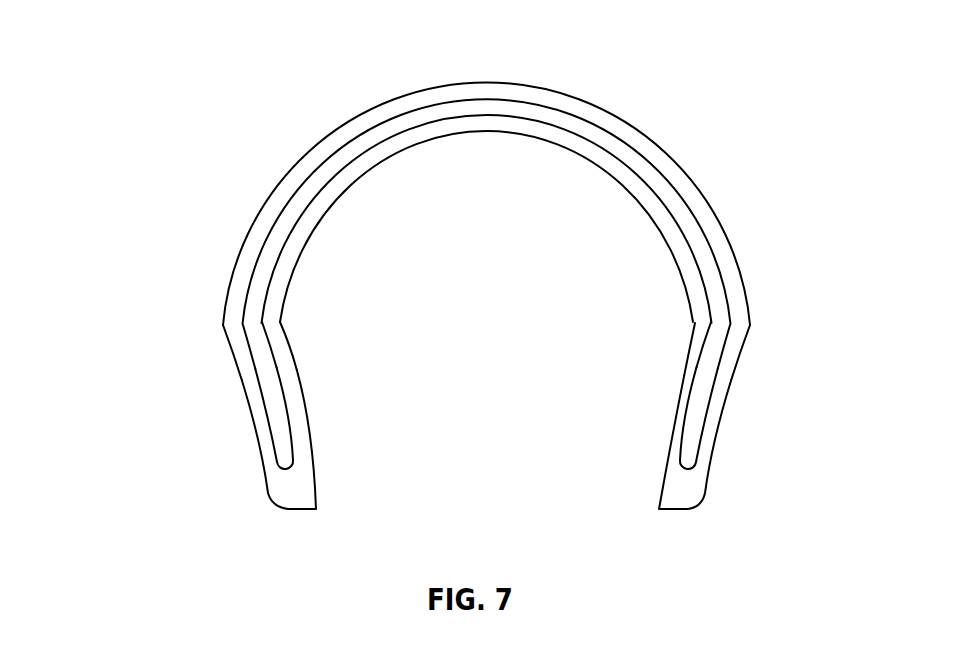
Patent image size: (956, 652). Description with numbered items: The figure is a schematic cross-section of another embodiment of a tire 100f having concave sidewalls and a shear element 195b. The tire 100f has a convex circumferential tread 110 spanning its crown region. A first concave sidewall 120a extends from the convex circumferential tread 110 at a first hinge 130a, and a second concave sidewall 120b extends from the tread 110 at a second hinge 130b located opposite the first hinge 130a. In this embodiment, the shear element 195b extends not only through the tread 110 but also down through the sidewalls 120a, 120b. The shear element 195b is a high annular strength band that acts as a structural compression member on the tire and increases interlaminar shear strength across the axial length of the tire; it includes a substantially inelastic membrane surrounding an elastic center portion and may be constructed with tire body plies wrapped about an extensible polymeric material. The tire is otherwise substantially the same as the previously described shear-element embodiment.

The tire 100f is at (191, 36).
The convex circumferential tread 110 is at (524, 83).
The shear element 195b is at (657, 190).
The first hinge 130a is at (283, 321).
The second hinge 130b is at (694, 323).
The first concave sidewall 120a is at (299, 431).
The second concave sidewall 120b is at (678, 427).